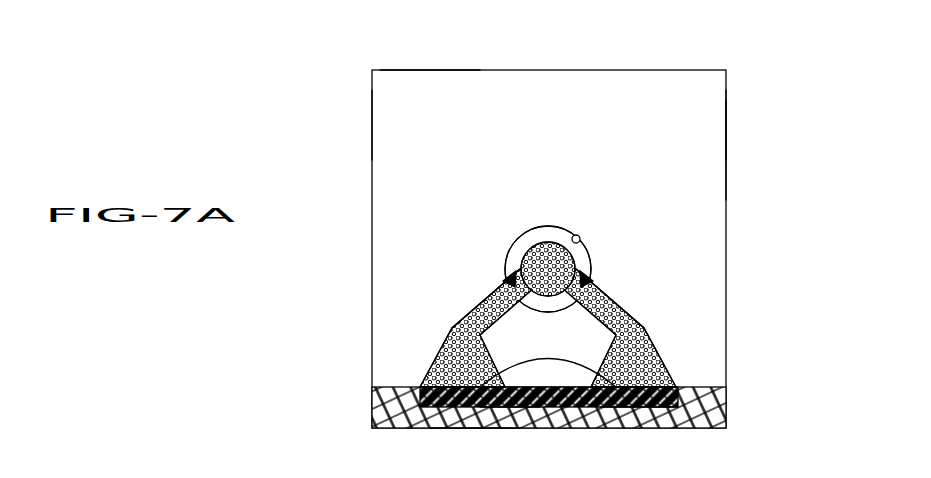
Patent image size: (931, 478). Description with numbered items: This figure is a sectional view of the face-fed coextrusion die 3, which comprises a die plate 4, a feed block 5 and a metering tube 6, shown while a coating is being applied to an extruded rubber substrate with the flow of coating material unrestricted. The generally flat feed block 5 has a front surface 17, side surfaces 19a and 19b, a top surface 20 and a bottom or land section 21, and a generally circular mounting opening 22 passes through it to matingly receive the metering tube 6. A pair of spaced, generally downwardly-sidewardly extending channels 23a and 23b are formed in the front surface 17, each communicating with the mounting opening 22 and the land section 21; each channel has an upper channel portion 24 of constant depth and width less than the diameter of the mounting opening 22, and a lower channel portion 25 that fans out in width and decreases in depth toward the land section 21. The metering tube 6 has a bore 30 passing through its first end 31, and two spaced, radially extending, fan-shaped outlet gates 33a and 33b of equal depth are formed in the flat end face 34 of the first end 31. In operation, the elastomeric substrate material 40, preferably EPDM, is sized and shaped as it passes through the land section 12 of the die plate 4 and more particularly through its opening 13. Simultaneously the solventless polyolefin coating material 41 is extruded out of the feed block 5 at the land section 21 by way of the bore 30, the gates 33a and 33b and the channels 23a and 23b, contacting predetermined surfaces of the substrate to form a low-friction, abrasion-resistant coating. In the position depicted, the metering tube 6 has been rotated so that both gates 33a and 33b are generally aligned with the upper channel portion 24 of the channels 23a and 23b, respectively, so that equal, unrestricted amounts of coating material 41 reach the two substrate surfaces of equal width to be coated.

The face-fed coextrusion die 3 is at (778, 228).
The die plate 4 is at (738, 410).
The feed block 5 is at (699, 66).
The metering tube 6 is at (567, 212).
The land section 12 is at (477, 428).
The opening 13 is at (510, 405).
The front surface 17 is at (710, 172).
The side surface 19a is at (372, 125).
The side surface 19b is at (727, 127).
The top surface 20 is at (400, 70).
The land section 21 is at (592, 407).
The mounting opening 22 is at (581, 236).
The channel 23a is at (435, 355).
The channel 23b is at (660, 355).
The upper channel portion 24 is at (476, 312).
The lower channel portion 25 is at (428, 373).
The bore 30 is at (527, 250).
The first end 31 is at (530, 232).
The outlet gate 33a is at (505, 278).
The outlet gate 33b is at (590, 280).
The flat end face 34 is at (547, 232).
The substrate material 40 is at (543, 405).
The coating material 41 is at (608, 363).